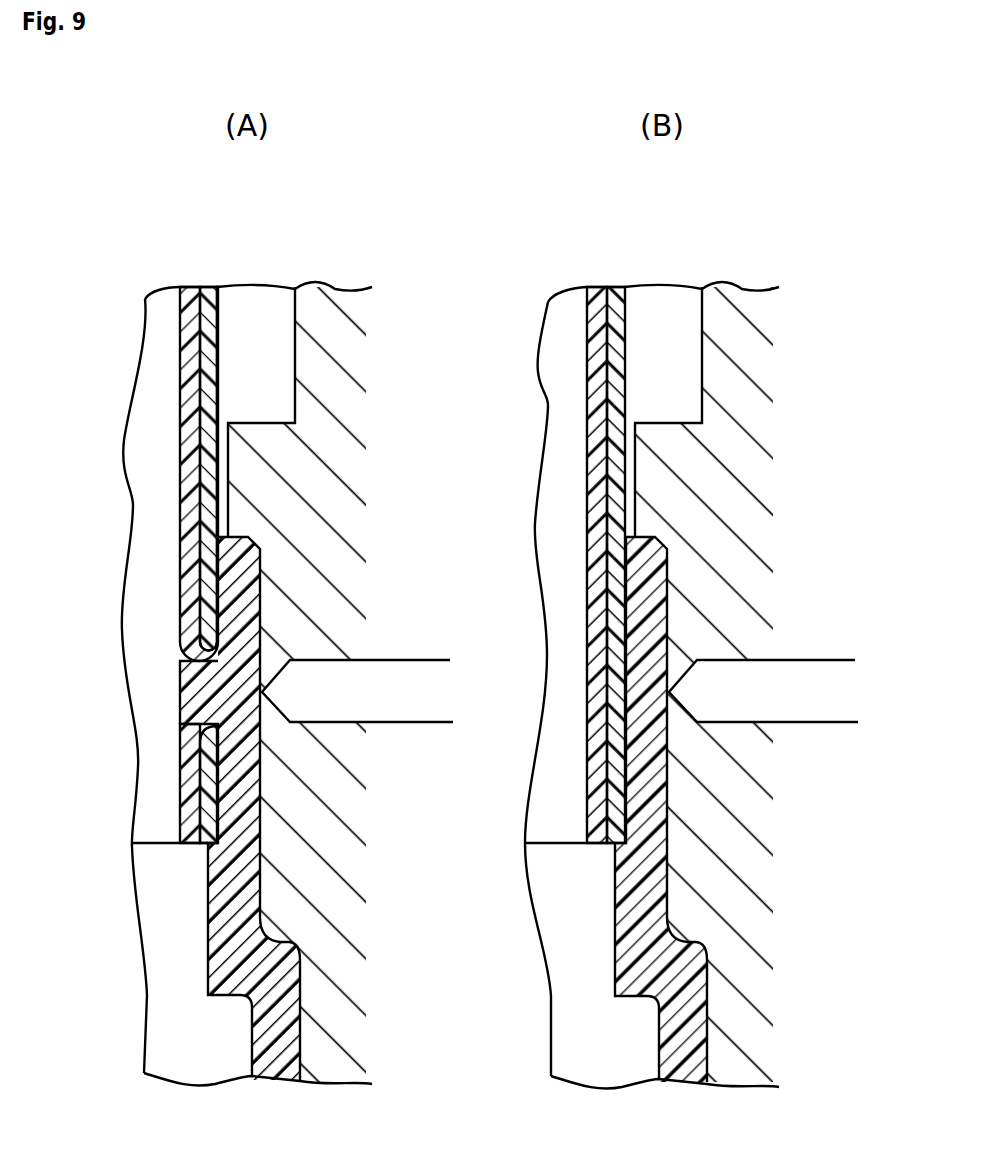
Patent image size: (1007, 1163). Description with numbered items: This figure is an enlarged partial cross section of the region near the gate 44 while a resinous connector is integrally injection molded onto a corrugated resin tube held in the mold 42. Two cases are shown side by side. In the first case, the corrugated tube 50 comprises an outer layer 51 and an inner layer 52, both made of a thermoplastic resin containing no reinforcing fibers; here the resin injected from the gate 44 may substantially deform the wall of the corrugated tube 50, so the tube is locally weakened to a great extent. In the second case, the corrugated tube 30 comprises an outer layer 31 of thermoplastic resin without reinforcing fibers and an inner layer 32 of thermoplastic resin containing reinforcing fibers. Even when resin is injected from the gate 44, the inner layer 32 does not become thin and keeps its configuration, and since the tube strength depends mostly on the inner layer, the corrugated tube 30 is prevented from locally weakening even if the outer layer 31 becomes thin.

The corrugated tube 30 is at (618, 504).
The outer layer 31 is at (638, 528).
The inner layer 32 is at (599, 287).
The mold 42 is at (322, 290).
The gate 44 is at (392, 660).
The corrugated tube 50 is at (429, 658).
The outer layer 51 is at (231, 528).
The inner layer 52 is at (192, 287).